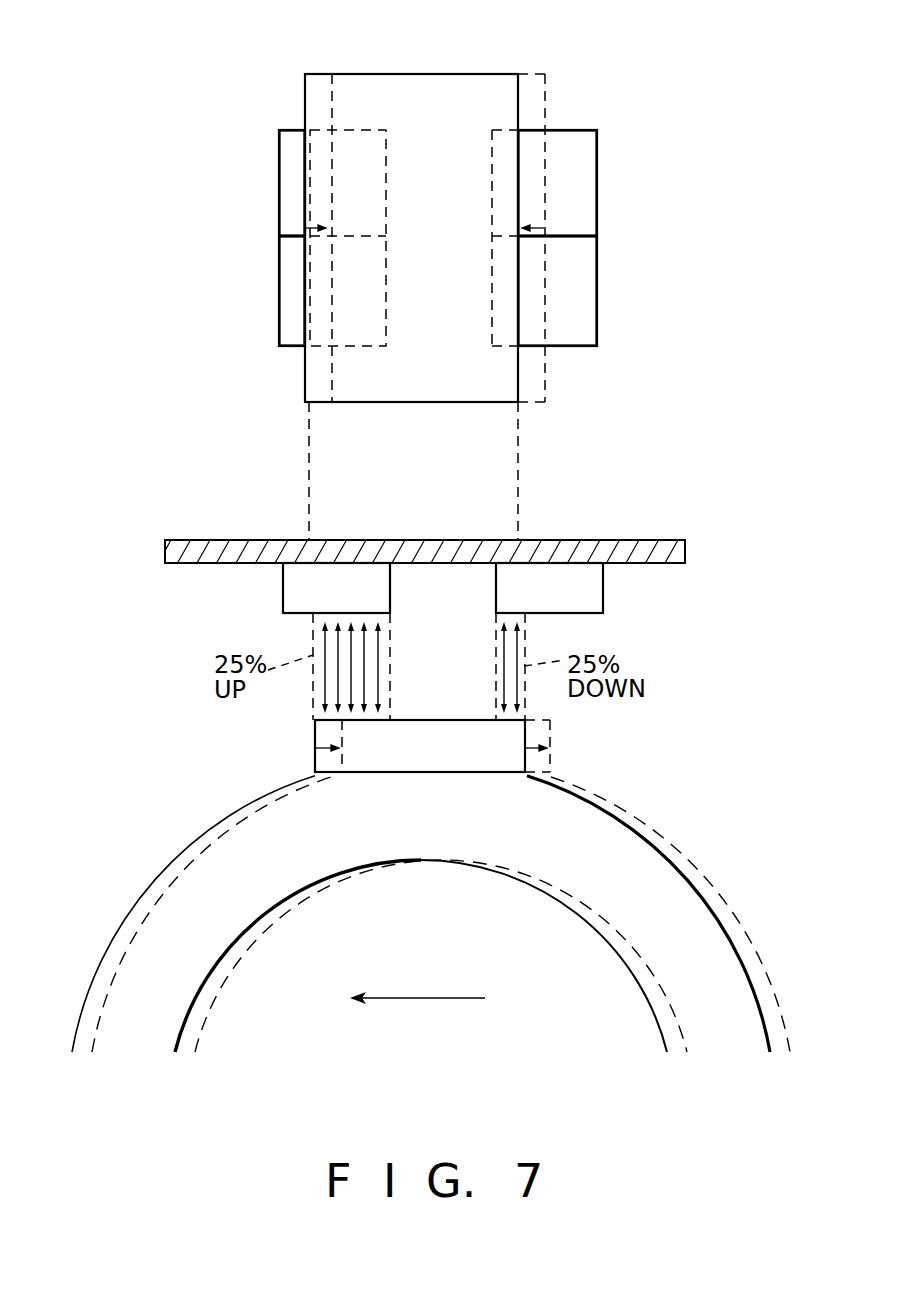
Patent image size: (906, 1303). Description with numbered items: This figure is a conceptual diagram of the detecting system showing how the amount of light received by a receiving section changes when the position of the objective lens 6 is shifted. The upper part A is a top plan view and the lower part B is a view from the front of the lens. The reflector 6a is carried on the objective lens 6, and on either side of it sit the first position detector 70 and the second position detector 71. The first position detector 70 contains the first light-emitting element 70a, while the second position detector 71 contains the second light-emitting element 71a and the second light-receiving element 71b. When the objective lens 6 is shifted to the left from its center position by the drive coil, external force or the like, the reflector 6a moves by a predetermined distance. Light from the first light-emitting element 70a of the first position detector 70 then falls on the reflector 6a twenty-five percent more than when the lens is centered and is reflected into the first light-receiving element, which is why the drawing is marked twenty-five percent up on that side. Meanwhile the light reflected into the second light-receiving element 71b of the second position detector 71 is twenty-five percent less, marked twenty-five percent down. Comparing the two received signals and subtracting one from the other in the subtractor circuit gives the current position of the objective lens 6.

The objective lens 6 is at (208, 828).
The reflector 6a is at (414, 74).
The first position detector 70 is at (291, 130).
The first light-emitting element 70a is at (287, 186).
The second position detector 71 is at (598, 128).
The second light-emitting element 71a is at (585, 189).
The second light-receiving element 71b is at (585, 287).
The top plan view part A is at (611, 404).
The front view part B is at (624, 733).